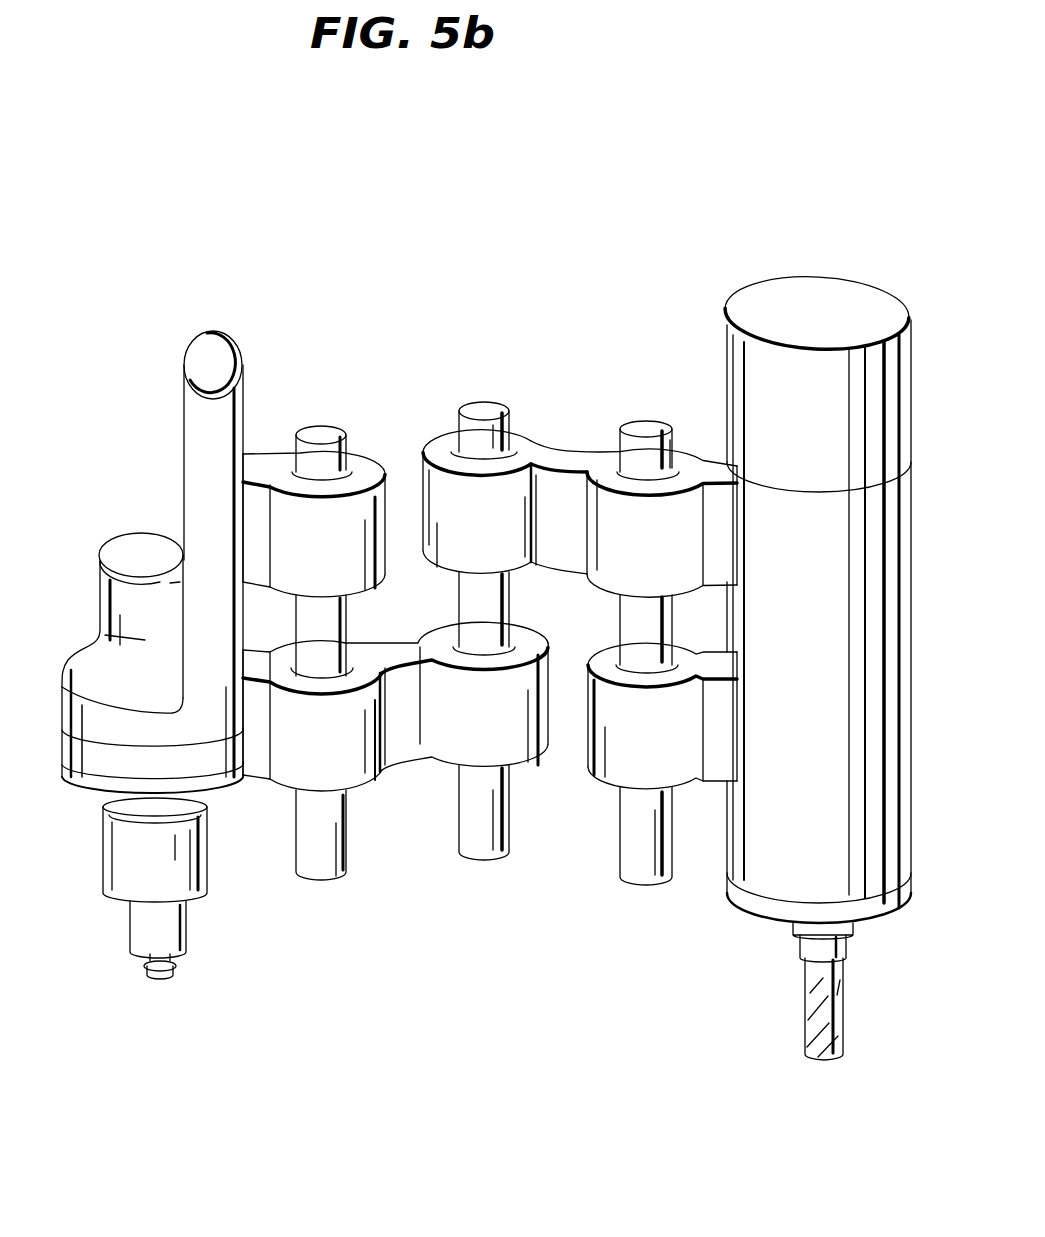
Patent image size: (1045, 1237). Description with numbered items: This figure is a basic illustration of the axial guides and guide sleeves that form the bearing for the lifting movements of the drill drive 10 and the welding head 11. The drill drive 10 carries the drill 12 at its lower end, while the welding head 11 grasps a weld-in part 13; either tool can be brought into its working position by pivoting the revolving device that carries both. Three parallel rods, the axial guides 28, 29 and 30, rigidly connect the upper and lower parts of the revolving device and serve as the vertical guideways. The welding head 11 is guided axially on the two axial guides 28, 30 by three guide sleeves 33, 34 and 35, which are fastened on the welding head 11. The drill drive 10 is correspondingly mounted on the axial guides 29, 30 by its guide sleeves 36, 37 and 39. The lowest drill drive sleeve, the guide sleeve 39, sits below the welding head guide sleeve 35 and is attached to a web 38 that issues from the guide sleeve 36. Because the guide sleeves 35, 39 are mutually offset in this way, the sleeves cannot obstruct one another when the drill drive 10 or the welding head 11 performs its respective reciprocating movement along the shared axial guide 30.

The drill drive 10 is at (820, 753).
The welding head 11 is at (132, 553).
The drill 12 is at (827, 1027).
The weld-in part 13 is at (163, 980).
The axial guide 28 is at (317, 432).
The axial guide 29 is at (648, 430).
The axial guide 30 is at (482, 408).
The guide sleeve 33 is at (303, 773).
The guide sleeve 34 is at (358, 472).
The guide sleeve 35 is at (468, 747).
The guide sleeve 36 is at (625, 758).
The guide sleeve 37 is at (673, 545).
The web 38 is at (557, 553).
The guide sleeve 39 is at (520, 447).